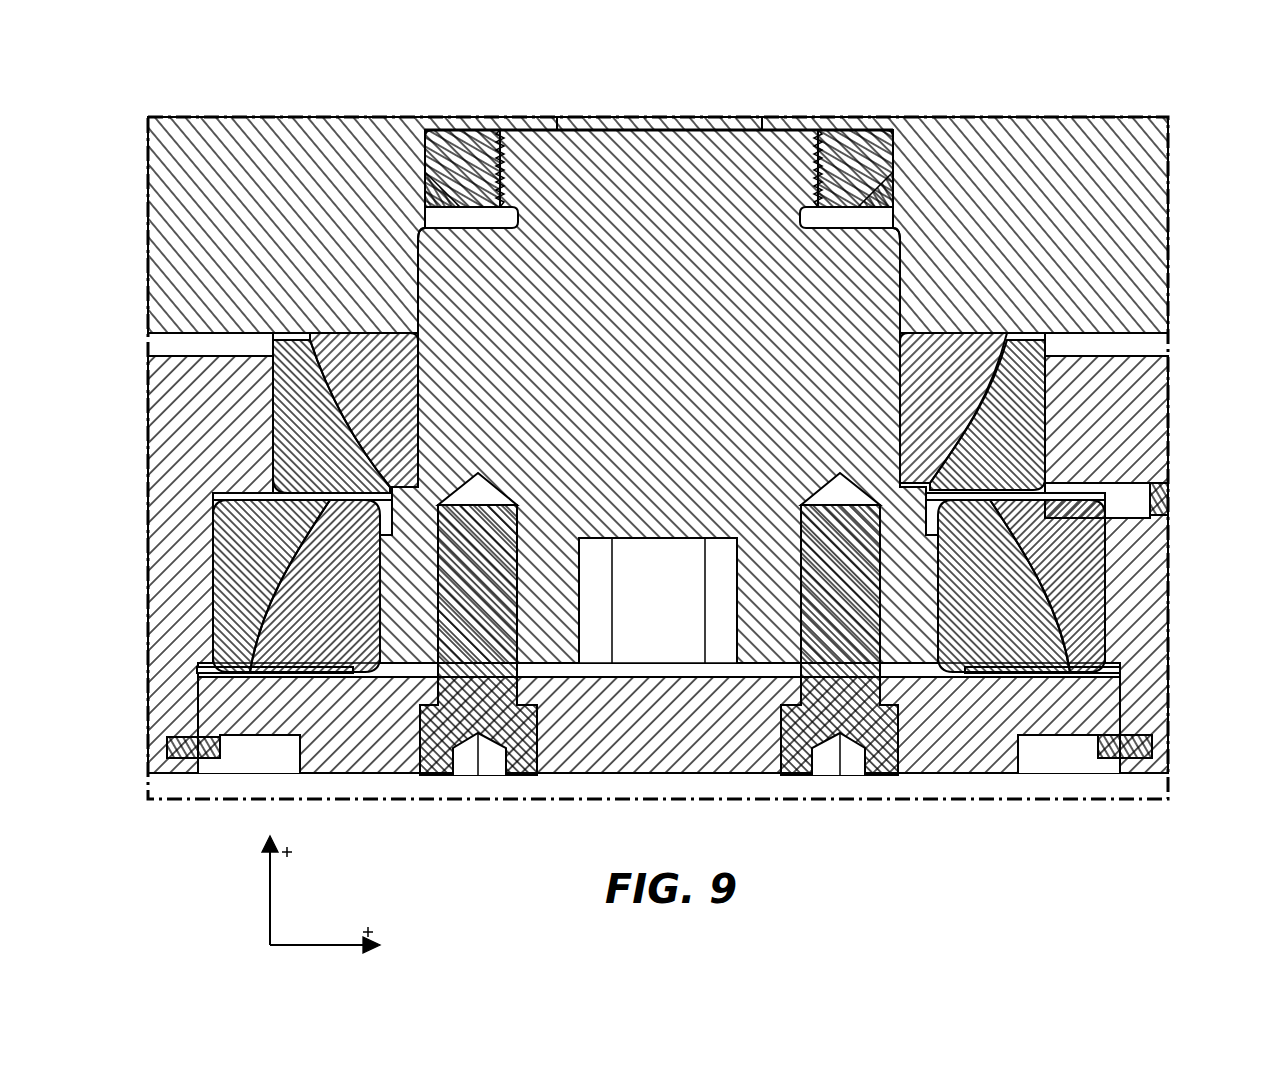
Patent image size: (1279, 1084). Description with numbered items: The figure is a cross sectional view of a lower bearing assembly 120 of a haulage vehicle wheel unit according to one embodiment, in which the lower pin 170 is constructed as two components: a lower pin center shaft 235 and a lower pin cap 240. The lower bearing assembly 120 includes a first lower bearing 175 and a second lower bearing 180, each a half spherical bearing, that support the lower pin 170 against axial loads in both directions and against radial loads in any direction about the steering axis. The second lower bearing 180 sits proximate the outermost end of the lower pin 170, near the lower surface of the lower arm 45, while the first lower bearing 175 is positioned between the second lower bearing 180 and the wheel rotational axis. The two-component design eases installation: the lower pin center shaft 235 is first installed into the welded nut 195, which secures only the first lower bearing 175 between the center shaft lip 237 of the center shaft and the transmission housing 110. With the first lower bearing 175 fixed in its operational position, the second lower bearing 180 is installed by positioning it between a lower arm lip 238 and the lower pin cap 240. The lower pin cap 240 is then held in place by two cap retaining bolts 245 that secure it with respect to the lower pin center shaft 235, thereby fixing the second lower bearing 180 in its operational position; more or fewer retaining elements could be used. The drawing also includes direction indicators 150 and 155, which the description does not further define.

The transmission housing 110 is at (326, 183).
The welded nut 195 is at (468, 160).
The center shaft lip 237 is at (928, 480).
The lower arm lip 238 is at (1063, 480).
The first lower bearing 175 is at (360, 417).
The second lower bearing 180 is at (320, 597).
The lower arm 45 is at (197, 633).
The lower pin cap 240 is at (307, 710).
The axial direction 155 is at (270, 885).
The radial direction 150 is at (325, 945).
The cap retaining bolts 245 is at (457, 605).
The lower pin center shaft 235 is at (557, 600).
The lower pin 170 is at (838, 812).
The lower bearing assembly 120 is at (998, 833).